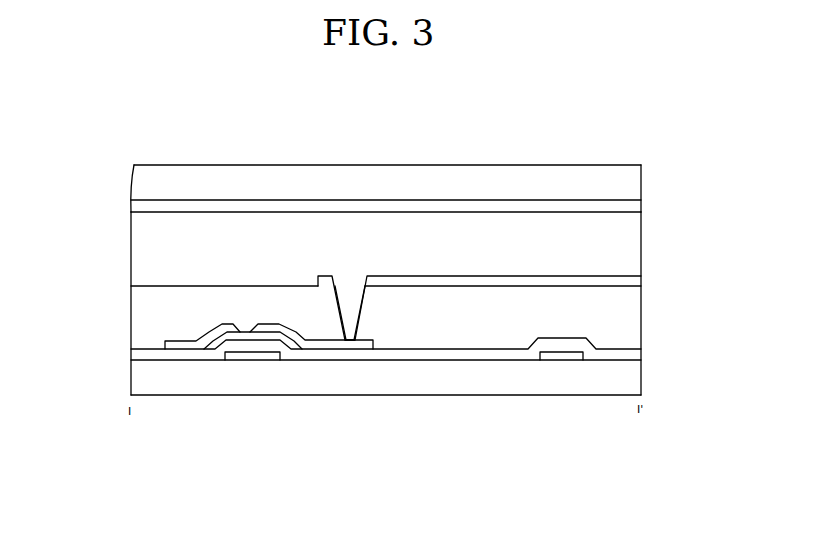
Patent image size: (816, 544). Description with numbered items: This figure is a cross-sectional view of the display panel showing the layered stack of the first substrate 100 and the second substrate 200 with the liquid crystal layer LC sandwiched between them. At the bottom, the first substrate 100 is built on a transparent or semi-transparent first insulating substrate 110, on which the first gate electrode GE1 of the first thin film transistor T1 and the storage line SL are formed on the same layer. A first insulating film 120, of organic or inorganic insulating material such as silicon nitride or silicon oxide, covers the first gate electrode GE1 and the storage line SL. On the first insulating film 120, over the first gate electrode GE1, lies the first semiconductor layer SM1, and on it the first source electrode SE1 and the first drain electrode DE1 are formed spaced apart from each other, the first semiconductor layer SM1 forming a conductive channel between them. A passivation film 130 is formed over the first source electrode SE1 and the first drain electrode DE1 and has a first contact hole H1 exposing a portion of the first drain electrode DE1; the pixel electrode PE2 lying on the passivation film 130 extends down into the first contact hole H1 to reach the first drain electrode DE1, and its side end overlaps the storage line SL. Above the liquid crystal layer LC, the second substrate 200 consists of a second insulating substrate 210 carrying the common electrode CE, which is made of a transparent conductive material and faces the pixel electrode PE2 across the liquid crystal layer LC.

The second substrate 200 is at (110, 163).
The second insulating substrate 210 is at (632, 176).
The common electrode CE is at (641, 206).
The liquid crystal layer LC is at (630, 245).
The first substrate 100 is at (110, 287).
The first insulating substrate 110 is at (628, 378).
The first insulating film 120 is at (630, 352).
The passivation film 130 is at (630, 313).
The second pixel electrode PE2 is at (641, 279).
The first contact hole H1 is at (368, 311).
The storage line SL is at (560, 361).
The first thin film transistor T1 is at (269, 395).
The first gate electrode GE1 is at (248, 360).
The first semiconductor layer SM1 is at (293, 345).
The first source electrode SE1 is at (192, 351).
The first drain electrode DE1 is at (311, 380).